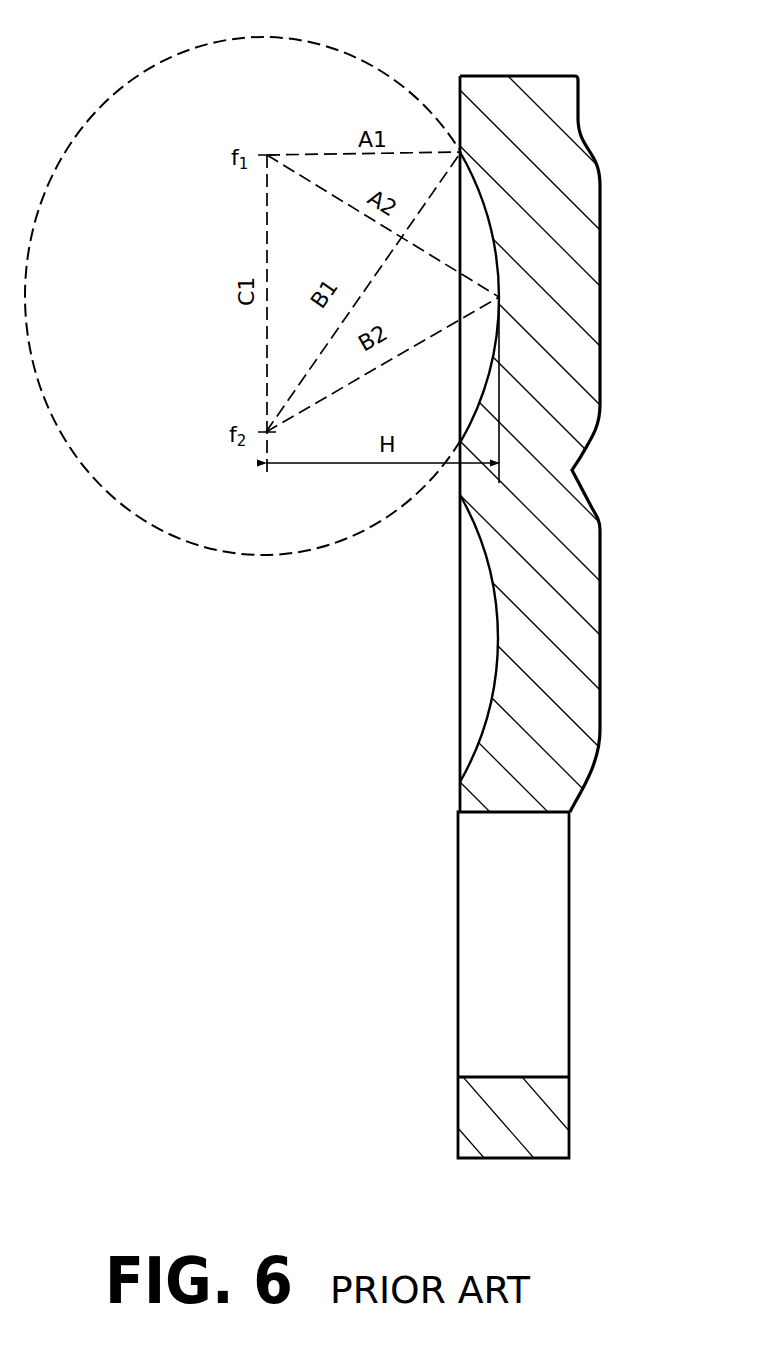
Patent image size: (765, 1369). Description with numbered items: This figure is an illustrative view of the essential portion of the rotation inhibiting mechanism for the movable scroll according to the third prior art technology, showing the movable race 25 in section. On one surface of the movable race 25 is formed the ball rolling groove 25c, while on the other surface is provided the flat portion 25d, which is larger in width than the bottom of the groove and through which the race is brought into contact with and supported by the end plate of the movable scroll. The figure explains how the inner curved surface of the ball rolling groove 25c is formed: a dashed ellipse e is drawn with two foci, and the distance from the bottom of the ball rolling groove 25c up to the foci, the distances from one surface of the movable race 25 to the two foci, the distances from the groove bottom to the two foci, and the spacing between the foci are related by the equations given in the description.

The movable race 25 is at (546, 607).
The ball rolling groove 25c is at (492, 410).
The flat portion 25d is at (600, 305).
The reference circle e is at (188, 542).